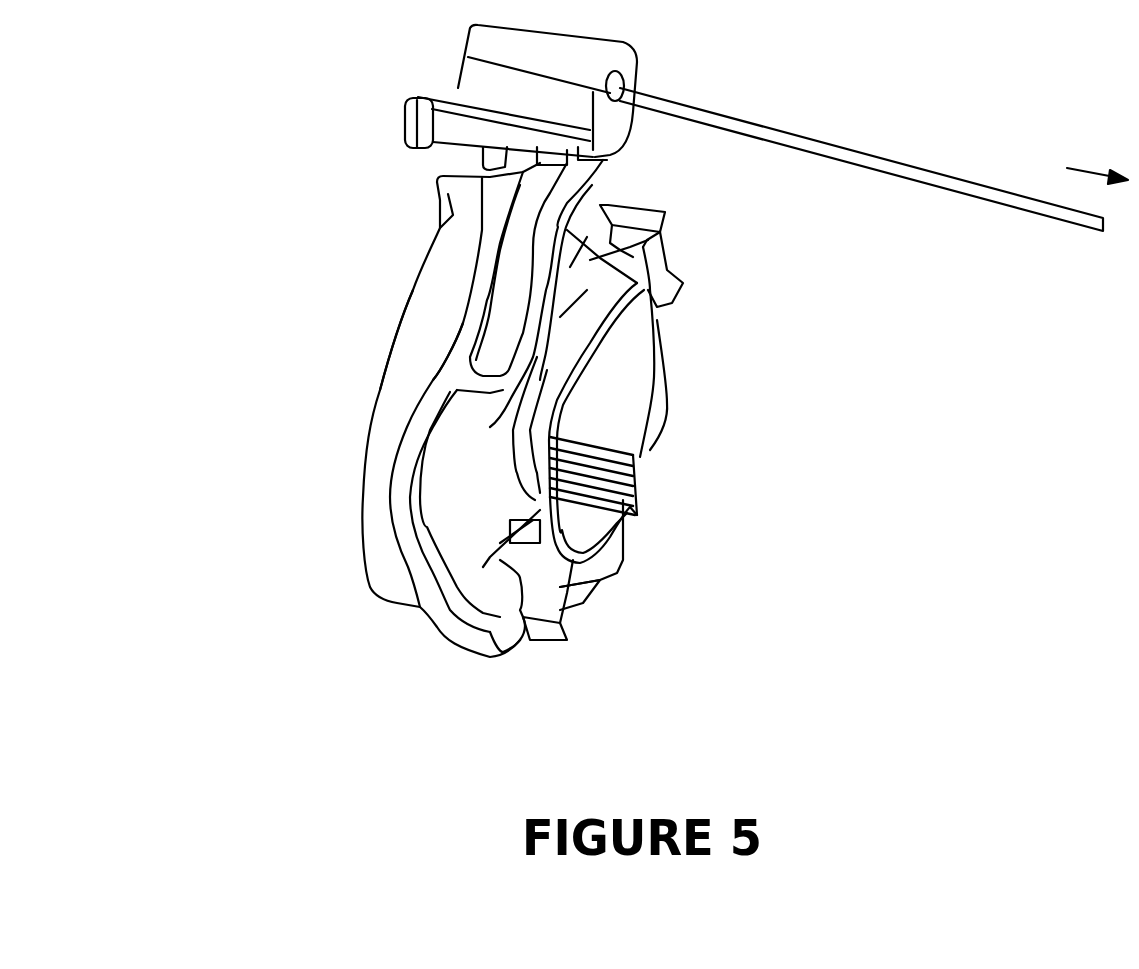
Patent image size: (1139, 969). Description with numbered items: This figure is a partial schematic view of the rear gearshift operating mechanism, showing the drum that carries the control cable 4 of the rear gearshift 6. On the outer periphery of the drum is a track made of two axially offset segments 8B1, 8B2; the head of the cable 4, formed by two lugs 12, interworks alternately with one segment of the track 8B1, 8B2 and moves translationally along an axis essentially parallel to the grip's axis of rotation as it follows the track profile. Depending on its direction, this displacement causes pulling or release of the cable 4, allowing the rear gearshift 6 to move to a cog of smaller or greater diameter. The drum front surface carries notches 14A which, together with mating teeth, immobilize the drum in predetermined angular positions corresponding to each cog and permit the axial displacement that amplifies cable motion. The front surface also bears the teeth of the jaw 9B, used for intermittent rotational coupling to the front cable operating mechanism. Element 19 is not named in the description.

The lugs 12 is at (403, 131).
The control cable of the rear gearshift 4 is at (767, 128).
The rear gearshift 6 is at (1097, 147).
The teeth of the jaw 9B is at (448, 196).
The track segment 8B1 is at (463, 357).
The track segment 8B2 is at (622, 272).
The notches 14A is at (667, 293).
The serrations 19 is at (628, 488).